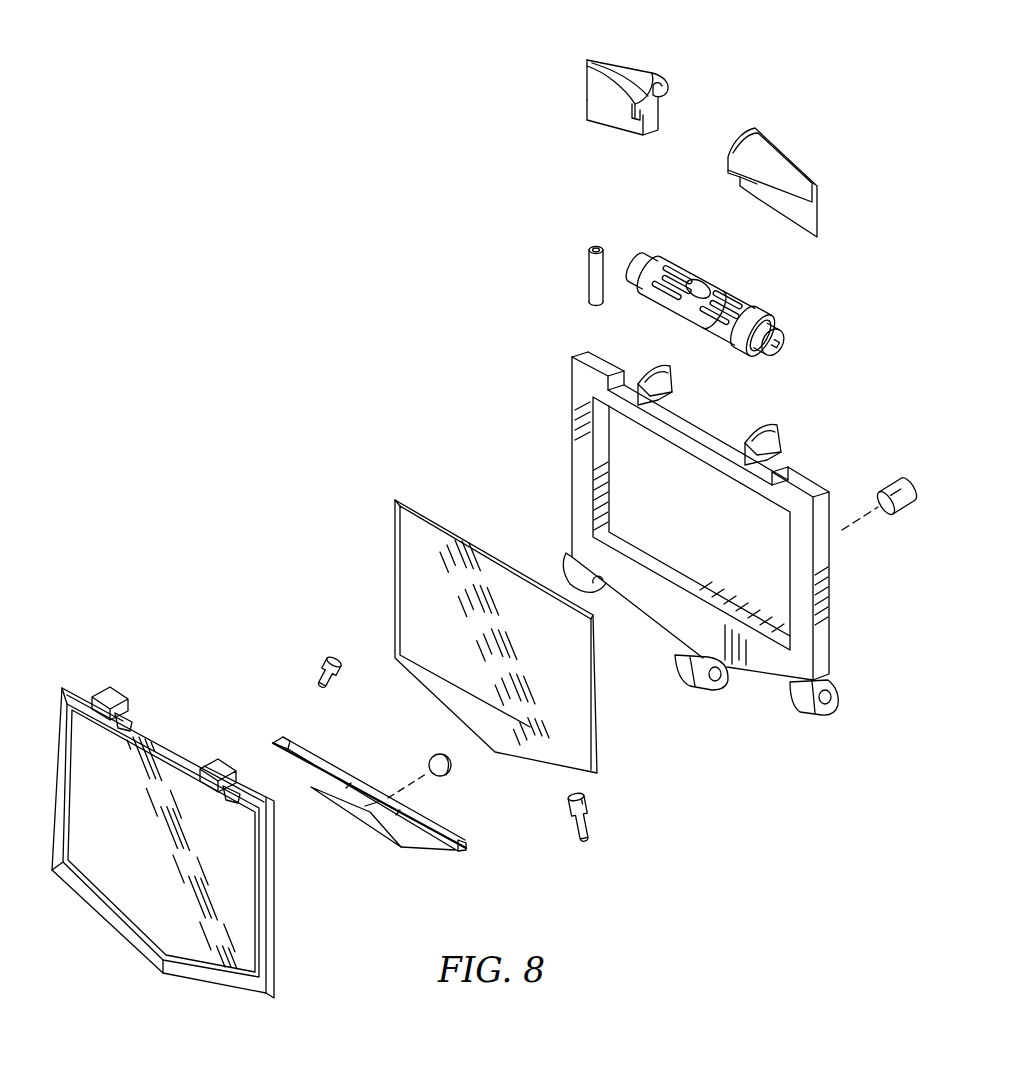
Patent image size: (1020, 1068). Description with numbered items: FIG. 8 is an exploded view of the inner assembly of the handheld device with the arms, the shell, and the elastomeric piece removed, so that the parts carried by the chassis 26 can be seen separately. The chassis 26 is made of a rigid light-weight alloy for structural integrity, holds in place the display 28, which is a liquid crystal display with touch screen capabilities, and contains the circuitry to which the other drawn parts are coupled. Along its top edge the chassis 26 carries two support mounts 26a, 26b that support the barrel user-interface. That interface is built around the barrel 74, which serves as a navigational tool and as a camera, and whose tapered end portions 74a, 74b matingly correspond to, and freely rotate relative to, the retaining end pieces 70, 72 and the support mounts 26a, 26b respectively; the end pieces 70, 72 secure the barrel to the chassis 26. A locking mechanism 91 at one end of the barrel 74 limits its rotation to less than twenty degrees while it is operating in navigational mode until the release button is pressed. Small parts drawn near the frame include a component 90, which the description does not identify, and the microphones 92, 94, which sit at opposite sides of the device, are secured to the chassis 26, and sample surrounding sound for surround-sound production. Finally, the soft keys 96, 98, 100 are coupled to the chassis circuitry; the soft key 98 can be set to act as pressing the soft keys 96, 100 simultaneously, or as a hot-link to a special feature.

The chassis 26 is at (730, 518).
The support mount 26a is at (650, 373).
The support mount 26b is at (760, 428).
The display 28 is at (460, 677).
The retaining end piece 70 is at (612, 76).
The retaining end piece 72 is at (772, 162).
The barrel 74 is at (734, 293).
The end portion 74a is at (642, 262).
The end portion 74b is at (770, 344).
The pin 90 is at (905, 488).
The locking mechanism 91 is at (769, 335).
The microphone 92 is at (593, 826).
The microphone 94 is at (333, 656).
The soft key 96 is at (369, 823).
The soft key 98 is at (368, 832).
The soft key 100 is at (317, 782).